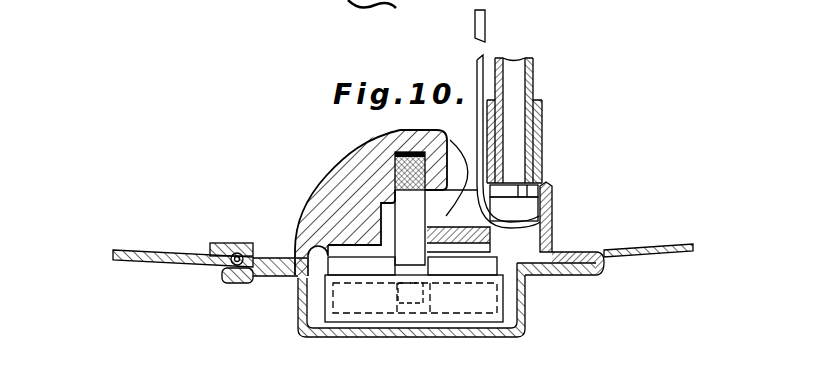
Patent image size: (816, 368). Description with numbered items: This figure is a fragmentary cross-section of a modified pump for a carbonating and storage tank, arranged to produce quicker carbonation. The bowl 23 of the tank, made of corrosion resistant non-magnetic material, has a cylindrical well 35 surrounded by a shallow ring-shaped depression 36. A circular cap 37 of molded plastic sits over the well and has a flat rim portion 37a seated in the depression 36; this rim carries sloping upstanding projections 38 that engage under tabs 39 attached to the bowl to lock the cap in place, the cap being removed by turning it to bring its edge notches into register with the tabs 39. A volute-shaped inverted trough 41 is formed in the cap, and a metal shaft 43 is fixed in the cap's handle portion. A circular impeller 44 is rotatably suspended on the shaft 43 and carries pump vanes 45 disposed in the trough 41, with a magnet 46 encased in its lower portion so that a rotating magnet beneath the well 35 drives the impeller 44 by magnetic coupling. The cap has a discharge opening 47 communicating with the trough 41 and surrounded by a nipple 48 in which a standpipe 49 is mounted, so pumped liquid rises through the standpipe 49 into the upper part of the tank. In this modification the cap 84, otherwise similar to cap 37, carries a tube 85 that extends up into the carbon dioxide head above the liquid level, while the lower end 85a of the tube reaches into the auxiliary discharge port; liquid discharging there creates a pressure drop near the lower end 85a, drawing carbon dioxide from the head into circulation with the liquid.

The bowl 23 is at (665, 253).
The cylindrical well 35 is at (492, 330).
The ring-shaped depression 36 is at (551, 276).
The circular cap 37 is at (360, 154).
The flat rim portion 37a is at (578, 256).
The sloping upstanding projections 38 is at (238, 273).
The tabs 39 is at (234, 247).
The volute-shaped inverted trough 41 is at (335, 192).
The metal shaft 43 is at (464, 168).
The circular impeller 44 is at (363, 298).
The pump vanes 45 is at (362, 265).
The magnet 46 is at (462, 302).
The discharge opening 47 is at (514, 203).
The nipple 48 is at (550, 206).
The standpipe 49 is at (534, 67).
The cap 84 is at (413, 210).
The tube 85 is at (485, 60).
The lower end of tube 85a is at (553, 215).